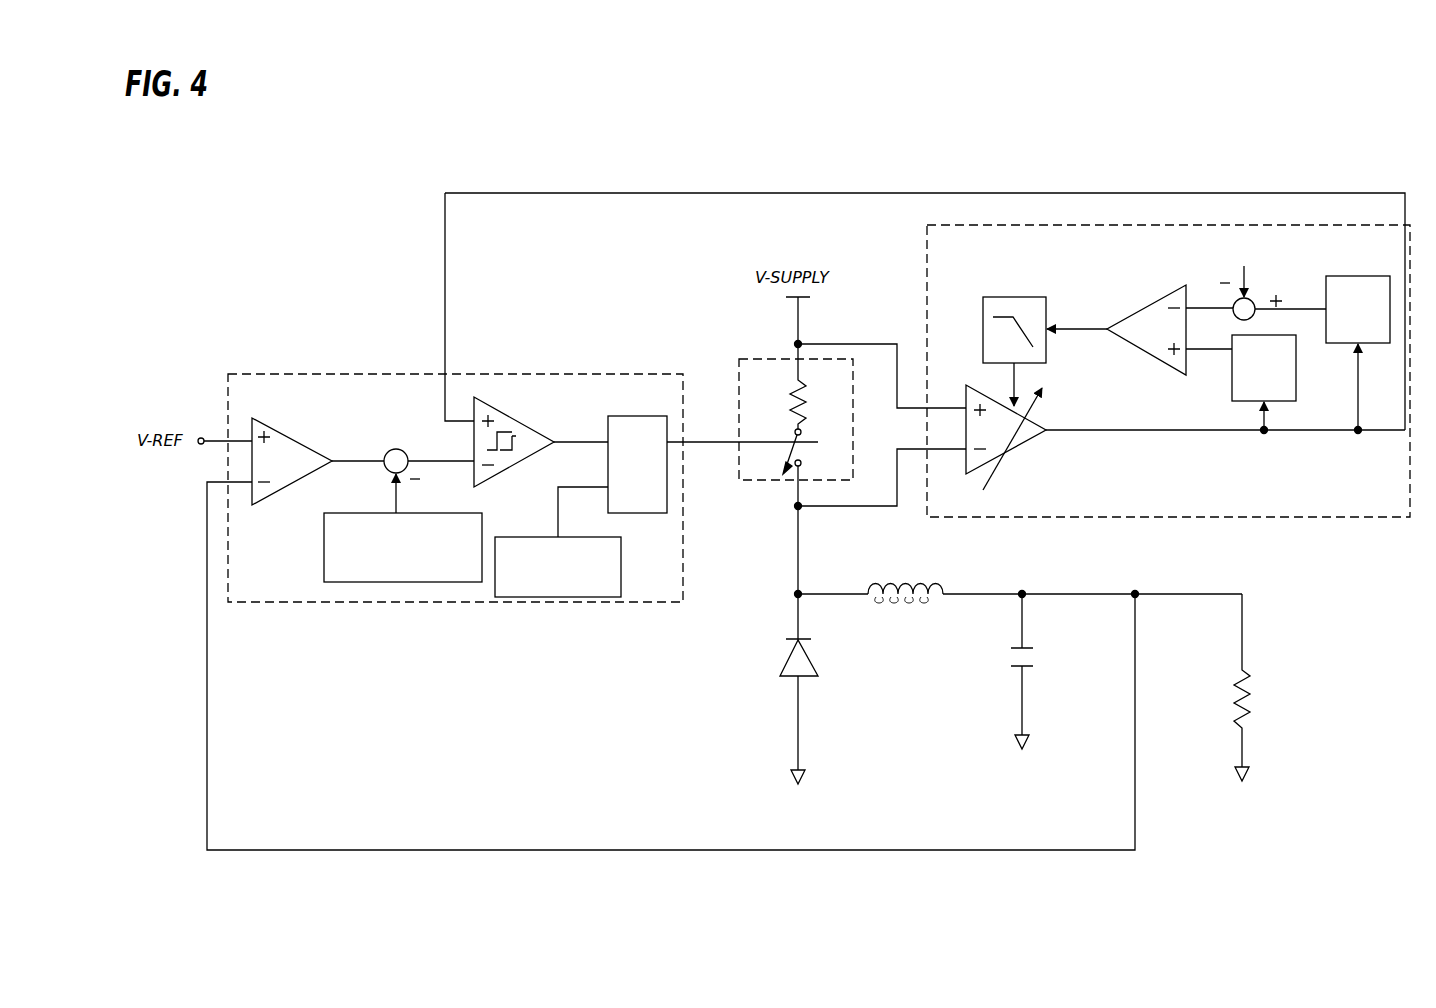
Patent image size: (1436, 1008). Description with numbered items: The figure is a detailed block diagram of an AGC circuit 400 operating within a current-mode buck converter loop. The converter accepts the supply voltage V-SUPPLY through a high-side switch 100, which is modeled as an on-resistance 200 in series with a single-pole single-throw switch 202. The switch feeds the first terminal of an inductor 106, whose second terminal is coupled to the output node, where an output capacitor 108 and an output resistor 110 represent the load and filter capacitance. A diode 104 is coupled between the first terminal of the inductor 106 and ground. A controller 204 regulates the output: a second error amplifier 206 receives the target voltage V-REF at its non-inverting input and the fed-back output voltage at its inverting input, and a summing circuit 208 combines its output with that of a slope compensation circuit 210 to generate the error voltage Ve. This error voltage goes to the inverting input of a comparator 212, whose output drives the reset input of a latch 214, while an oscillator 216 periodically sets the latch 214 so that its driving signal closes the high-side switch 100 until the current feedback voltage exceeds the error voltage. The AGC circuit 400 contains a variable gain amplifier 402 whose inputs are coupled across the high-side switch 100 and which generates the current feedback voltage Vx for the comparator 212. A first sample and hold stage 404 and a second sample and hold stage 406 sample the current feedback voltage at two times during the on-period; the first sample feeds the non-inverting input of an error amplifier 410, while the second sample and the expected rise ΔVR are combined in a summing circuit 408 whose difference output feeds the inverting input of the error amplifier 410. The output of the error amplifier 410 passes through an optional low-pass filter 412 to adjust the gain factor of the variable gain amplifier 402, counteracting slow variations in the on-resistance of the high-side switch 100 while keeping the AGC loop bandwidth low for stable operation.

The high-side switch 100 is at (794, 435).
The diode 104 is at (816, 655).
The inductor 106 is at (900, 605).
The output capacitor 108 is at (1020, 673).
The output resistor 110 is at (1253, 698).
The on-resistance 200 is at (790, 402).
The single-pole single-throw switch 202 is at (803, 449).
The controller 204 is at (425, 603).
The second error amplifier 206 is at (280, 495).
The summing circuit 208 is at (393, 449).
The slope compensation circuit 210 is at (324, 568).
The comparator 212 is at (505, 468).
The latch 214 is at (636, 513).
The oscillator 216 is at (621, 567).
The AGC circuit 400 is at (1083, 517).
The variable gain amplifier 402 is at (1010, 455).
The first sample and hold stage 404 is at (1232, 388).
The second sample and hold stage 406 is at (1383, 343).
The summing circuit 408 is at (1255, 300).
The error amplifier 410 is at (1150, 305).
The low-pass filter 412 is at (1015, 297).